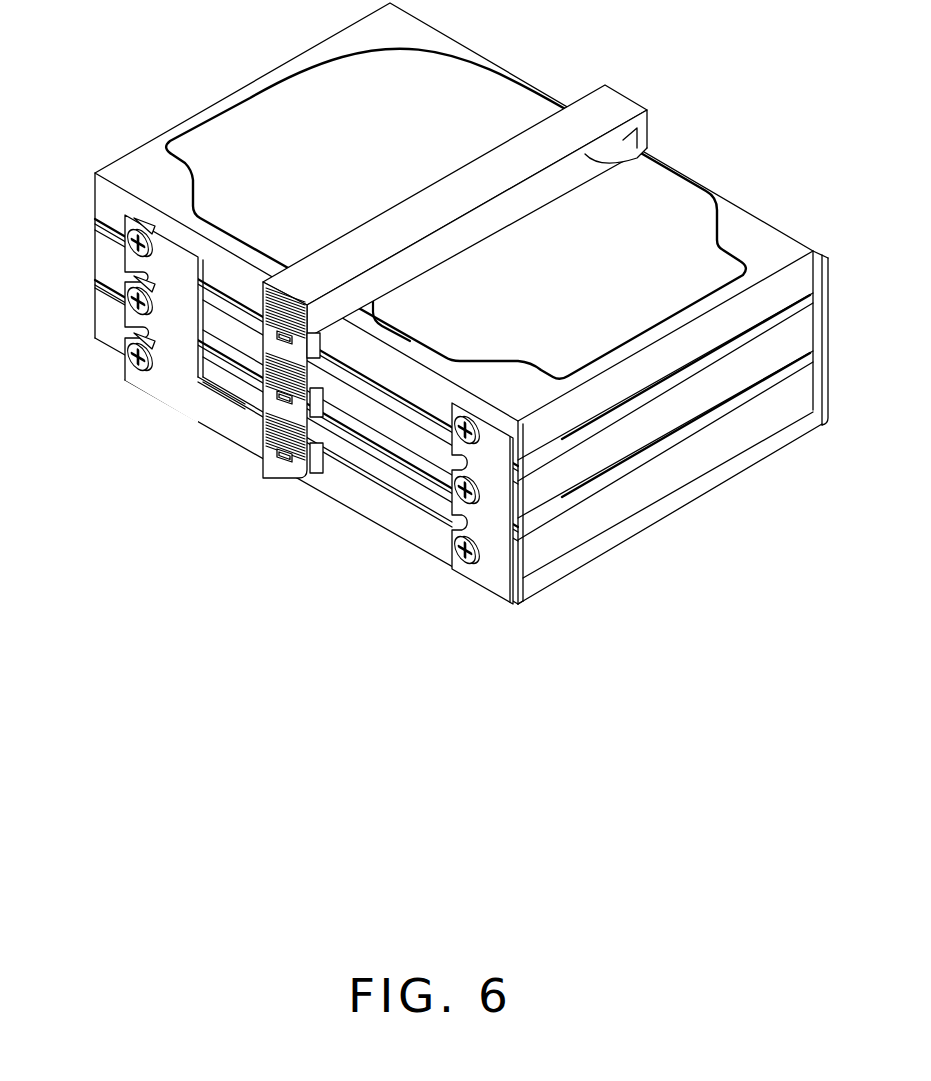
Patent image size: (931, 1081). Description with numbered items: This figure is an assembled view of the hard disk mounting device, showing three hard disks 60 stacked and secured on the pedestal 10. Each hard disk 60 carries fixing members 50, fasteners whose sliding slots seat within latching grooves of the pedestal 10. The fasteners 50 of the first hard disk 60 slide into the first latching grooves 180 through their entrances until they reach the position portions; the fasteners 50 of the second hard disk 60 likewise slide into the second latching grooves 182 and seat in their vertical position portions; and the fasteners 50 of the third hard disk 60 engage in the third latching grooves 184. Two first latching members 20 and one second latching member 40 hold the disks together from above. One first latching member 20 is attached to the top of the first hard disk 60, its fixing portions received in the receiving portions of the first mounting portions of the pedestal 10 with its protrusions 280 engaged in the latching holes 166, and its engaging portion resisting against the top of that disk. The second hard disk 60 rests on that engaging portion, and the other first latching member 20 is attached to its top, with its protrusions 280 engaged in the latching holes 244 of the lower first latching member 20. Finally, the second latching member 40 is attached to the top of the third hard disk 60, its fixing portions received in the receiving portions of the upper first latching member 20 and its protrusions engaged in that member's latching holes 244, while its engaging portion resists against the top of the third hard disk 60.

The pedestal 10 is at (498, 570).
The first latching member 20 is at (315, 365).
The second latching member 40 is at (283, 297).
The fixing member 50 is at (458, 552).
The hard disk 60 is at (647, 480).
The latching hole 166 is at (268, 470).
The first latching groove 180 is at (130, 332).
The second latching groove 182 is at (140, 282).
The third latching groove 184 is at (125, 203).
The latching hole 244 is at (280, 400).
The protrusion 280 is at (280, 456).